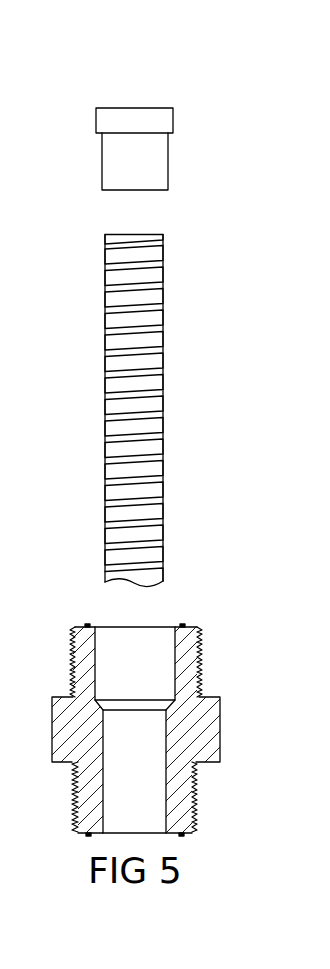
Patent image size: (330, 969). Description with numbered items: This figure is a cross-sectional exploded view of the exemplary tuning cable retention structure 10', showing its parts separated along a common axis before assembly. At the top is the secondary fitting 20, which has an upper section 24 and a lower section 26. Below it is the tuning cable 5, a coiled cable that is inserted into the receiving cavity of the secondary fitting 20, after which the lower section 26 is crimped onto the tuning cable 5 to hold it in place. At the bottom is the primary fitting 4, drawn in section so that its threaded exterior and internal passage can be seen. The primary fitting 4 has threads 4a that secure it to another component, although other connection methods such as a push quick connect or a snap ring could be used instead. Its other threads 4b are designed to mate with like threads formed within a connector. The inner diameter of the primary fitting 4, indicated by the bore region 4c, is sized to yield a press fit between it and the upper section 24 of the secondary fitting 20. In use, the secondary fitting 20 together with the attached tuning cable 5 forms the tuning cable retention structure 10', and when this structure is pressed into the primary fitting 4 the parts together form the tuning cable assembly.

The tuning cable retention structure 10' is at (139, 123).
The secondary fitting 20 is at (139, 149).
The upper section 24 is at (174, 120).
The lower section 26 is at (162, 168).
The tuning cable 5 is at (158, 403).
The primary fitting 4 is at (165, 711).
The threads 4a is at (201, 649).
The threads 4b is at (197, 789).
The bore of fitting 4c is at (96, 637).